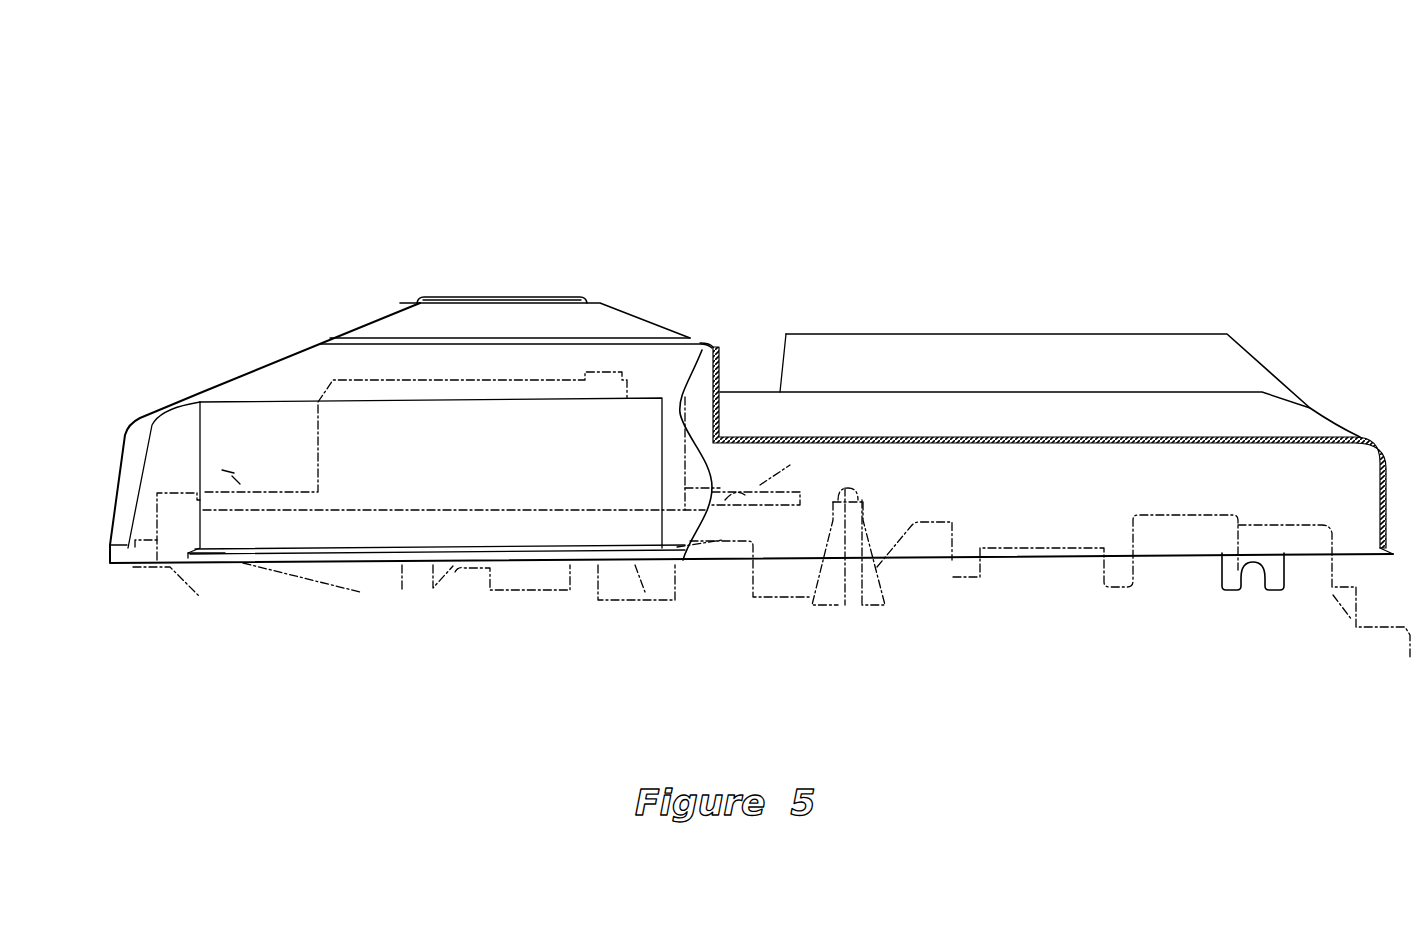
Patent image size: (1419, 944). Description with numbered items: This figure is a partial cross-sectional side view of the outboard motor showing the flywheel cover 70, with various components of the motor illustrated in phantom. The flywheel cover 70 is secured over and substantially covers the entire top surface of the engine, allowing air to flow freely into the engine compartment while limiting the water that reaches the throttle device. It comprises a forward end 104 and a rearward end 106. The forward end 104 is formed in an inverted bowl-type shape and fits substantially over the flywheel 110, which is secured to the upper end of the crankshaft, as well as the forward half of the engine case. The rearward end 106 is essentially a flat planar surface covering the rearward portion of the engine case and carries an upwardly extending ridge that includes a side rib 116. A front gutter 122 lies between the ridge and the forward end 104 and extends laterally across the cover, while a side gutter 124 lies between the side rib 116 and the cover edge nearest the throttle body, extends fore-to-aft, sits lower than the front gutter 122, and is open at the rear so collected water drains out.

The flywheel cover 70 is at (450, 128).
The forward end 104 is at (386, 307).
The rearward end 106 is at (1226, 435).
The flywheel 110 is at (317, 465).
The side rib 116 is at (1077, 362).
The front gutter 122 is at (745, 372).
The side gutter 124 is at (920, 418).